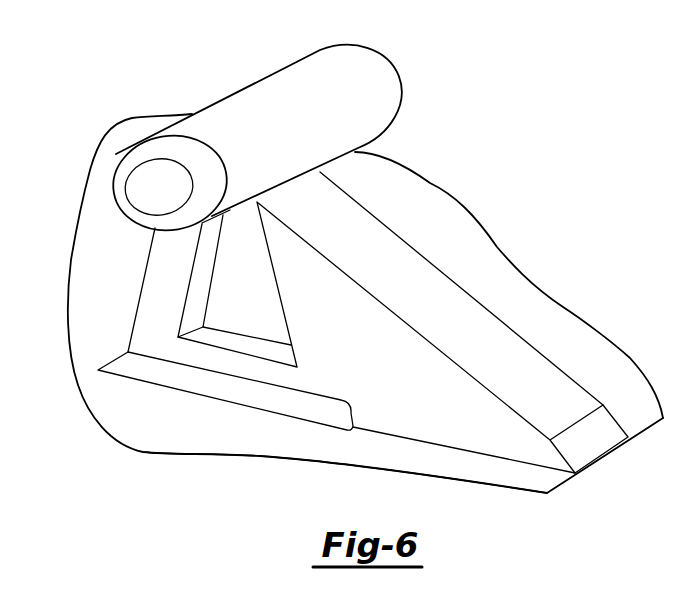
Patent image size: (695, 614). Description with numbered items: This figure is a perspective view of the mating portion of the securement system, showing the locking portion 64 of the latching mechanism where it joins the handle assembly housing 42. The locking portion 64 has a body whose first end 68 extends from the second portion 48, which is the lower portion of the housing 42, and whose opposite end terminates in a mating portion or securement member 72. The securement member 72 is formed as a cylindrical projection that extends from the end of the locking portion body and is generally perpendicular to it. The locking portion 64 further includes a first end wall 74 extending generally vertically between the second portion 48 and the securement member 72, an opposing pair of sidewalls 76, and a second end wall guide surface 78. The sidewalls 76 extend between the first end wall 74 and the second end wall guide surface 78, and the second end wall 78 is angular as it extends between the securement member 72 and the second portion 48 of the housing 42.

The housing 42 is at (110, 120).
The second portion 48 is at (558, 328).
The locking portion 64 is at (478, 111).
The first end 68 is at (220, 388).
The securement member 72 is at (302, 83).
The first end wall 74 is at (142, 290).
The sidewalls 76 is at (205, 339).
The second end wall guide surface 78 is at (348, 232).